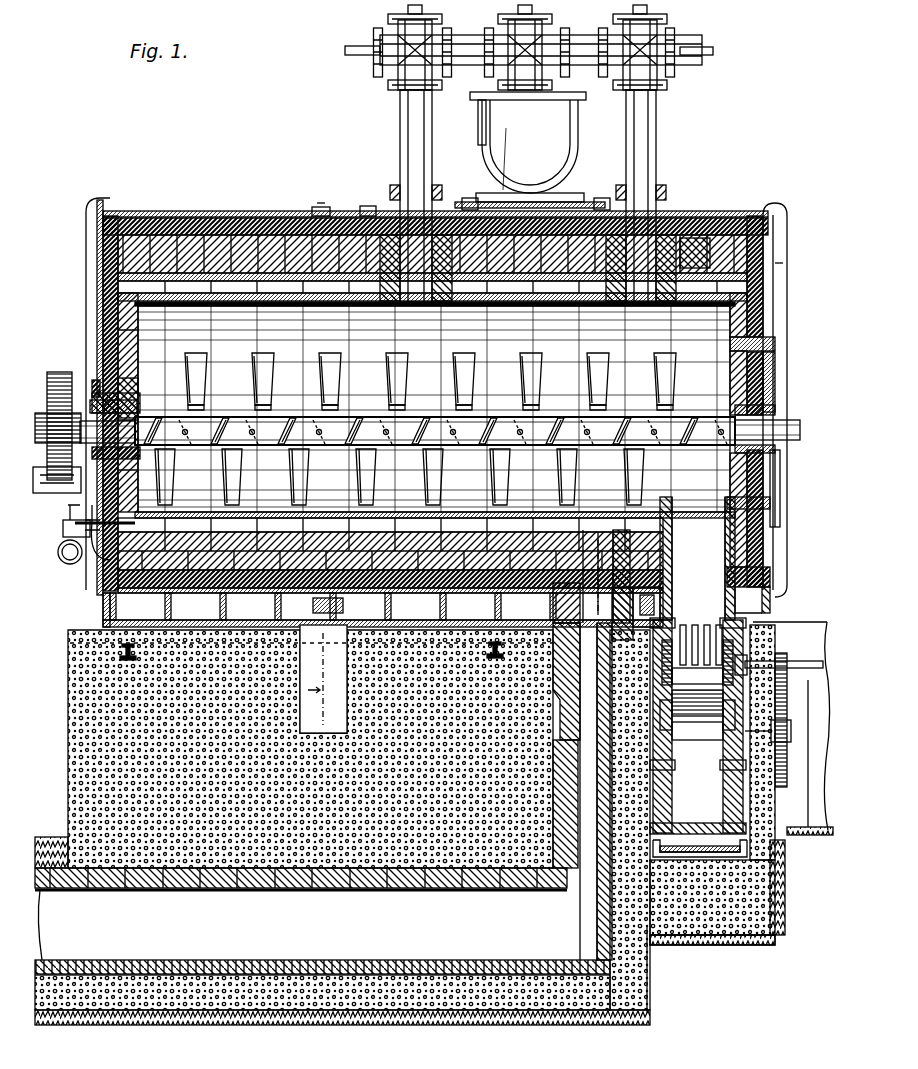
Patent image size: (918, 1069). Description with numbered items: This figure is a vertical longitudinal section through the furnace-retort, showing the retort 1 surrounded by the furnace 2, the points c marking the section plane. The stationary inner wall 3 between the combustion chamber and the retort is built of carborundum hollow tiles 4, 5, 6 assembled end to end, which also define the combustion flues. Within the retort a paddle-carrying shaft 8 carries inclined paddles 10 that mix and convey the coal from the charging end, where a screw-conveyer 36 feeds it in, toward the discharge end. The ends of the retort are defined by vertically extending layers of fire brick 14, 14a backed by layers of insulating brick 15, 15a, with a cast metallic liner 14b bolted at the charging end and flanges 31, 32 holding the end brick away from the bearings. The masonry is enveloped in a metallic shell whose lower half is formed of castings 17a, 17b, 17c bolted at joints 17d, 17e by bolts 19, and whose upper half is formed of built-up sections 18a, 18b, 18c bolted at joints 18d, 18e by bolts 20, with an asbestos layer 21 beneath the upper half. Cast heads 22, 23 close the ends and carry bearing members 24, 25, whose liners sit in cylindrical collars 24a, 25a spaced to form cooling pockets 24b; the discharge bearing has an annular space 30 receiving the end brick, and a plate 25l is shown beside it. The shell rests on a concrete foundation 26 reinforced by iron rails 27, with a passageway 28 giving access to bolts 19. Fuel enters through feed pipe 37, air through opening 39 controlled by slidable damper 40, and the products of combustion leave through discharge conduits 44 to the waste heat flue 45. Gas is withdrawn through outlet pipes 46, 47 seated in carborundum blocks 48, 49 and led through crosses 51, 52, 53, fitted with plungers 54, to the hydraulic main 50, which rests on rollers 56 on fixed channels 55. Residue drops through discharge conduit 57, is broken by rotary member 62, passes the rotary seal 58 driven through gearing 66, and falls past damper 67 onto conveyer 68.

The retort 1 is at (290, 306).
The furnace 2 is at (505, 306).
The inner wall 3 is at (380, 306).
The hollow tile 4 is at (707, 190).
The hollow tile 5 is at (285, 192).
The hollow tile 6 is at (590, 592).
The paddle-carrying shaft 8 is at (408, 416).
The paddles 10 is at (520, 378).
The vertically extending layer of clay brick 14 is at (730, 388).
The vertically extending layer of clay brick 14a is at (118, 350).
The cast metallic liner 14b is at (138, 350).
The vertically extending layer of heat insulating brick 15 is at (765, 314).
The vertically extending layer of heat insulating brick 15a is at (105, 312).
The casting 17a is at (103, 610).
The casting 17b is at (410, 630).
The casting 17c is at (583, 681).
The joint 17d is at (324, 665).
The joint 17e is at (580, 700).
The built-up section 18a is at (210, 218).
The built-up section 18b is at (470, 197).
The built-up section 18c is at (735, 220).
The joint 18d is at (326, 205).
The joint 18e is at (600, 196).
The bolts 19 is at (340, 606).
The bolts 20 is at (524, 190).
The asbestos layer 21 is at (153, 212).
The head 22 is at (84, 254).
The head 23 is at (788, 244).
The bearing member 24 is at (95, 398).
The cylindrical collar 24a is at (140, 404).
The pocket 24b is at (85, 525).
The bearing member 25 is at (775, 398).
The end bearing plate 25l is at (778, 414).
The cylindrical collar 25a is at (781, 462).
The foundation 26 is at (330, 820).
The iron rails 27 is at (120, 658).
The passageway 28 is at (290, 810).
The annular space 30 is at (722, 510).
The flange 31 is at (135, 384).
The flange 32 is at (730, 346).
The screw-conveyer 36 is at (47, 457).
The feed pipe 37 is at (63, 534).
The opening 39 is at (95, 560).
The slidable damper 40 is at (58, 556).
The discharge conduit 44 is at (650, 575).
The waste heat flue 45 is at (434, 926).
The gas outlet pipe 46 is at (363, 200).
The gas outlet pipe 47 is at (690, 200).
The masonry block 48 is at (404, 303).
The masonry block 49 is at (640, 303).
The hydraulic main 50 is at (480, 130).
The cross 51 is at (384, 38).
The cross 52 is at (665, 52).
The cross 53 is at (548, 40).
The plunger 54 is at (430, 12).
The fixed channel 55 is at (678, 128).
The roller 56 is at (655, 12).
The discharge conduit 57 is at (750, 597).
The rotary seal 58 is at (736, 715).
The rotary member 62 is at (752, 652).
The gearing 66 is at (787, 726).
The movable damper 67 is at (698, 822).
The conveyer 68 is at (702, 857).
The points c is at (303, 366).